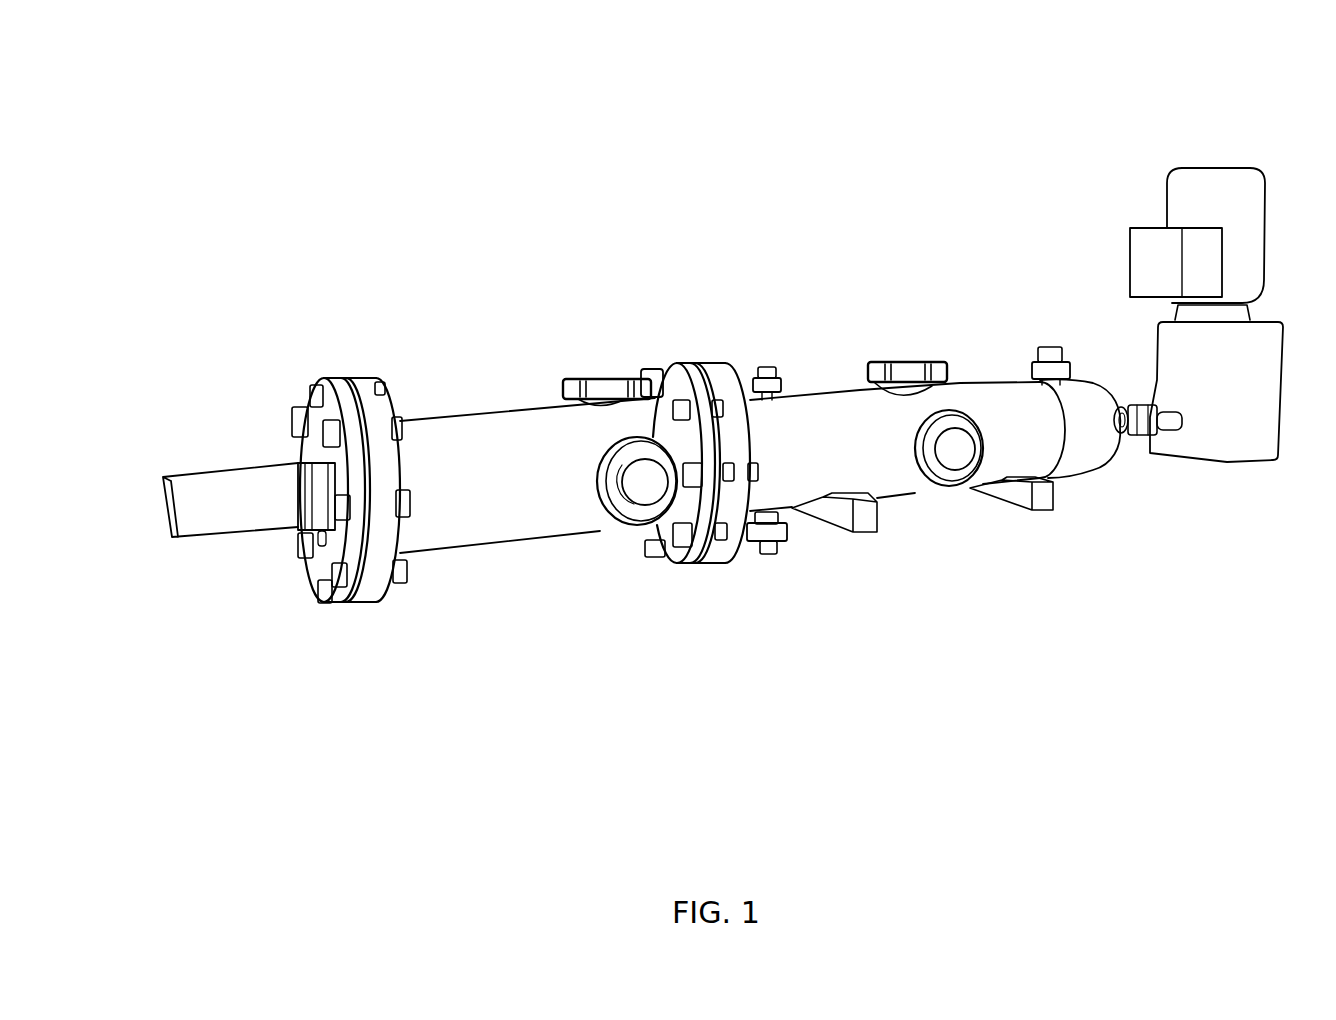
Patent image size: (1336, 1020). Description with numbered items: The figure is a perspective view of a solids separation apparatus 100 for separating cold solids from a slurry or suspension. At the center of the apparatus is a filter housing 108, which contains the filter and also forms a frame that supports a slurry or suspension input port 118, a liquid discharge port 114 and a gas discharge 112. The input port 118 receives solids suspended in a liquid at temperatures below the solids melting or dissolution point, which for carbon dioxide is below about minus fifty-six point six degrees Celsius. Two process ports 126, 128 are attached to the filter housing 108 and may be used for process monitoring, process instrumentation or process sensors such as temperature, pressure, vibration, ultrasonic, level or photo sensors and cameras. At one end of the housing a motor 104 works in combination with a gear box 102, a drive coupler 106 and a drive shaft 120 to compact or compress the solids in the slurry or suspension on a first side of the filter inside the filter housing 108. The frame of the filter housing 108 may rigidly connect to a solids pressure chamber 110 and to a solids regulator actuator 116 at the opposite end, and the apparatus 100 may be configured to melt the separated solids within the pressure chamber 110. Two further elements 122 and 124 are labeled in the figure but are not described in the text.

The solids separation apparatus 100 is at (232, 82).
The gear box 102 is at (1252, 448).
The motor 104 is at (1199, 177).
The drive coupler 106 is at (1152, 407).
The filter housing 108 is at (1000, 398).
The solids pressure chamber 110 is at (492, 437).
The gas discharge 112 is at (762, 367).
The liquid discharge port 114 is at (762, 554).
The solids regulator actuator 116 is at (222, 505).
The slurry or suspension input port 118 is at (1057, 347).
The drive shaft 120 is at (1131, 437).
The left clamp bracket 122 is at (600, 377).
The left port 124 is at (635, 493).
The process port 126 is at (908, 362).
The process port 128 is at (950, 457).